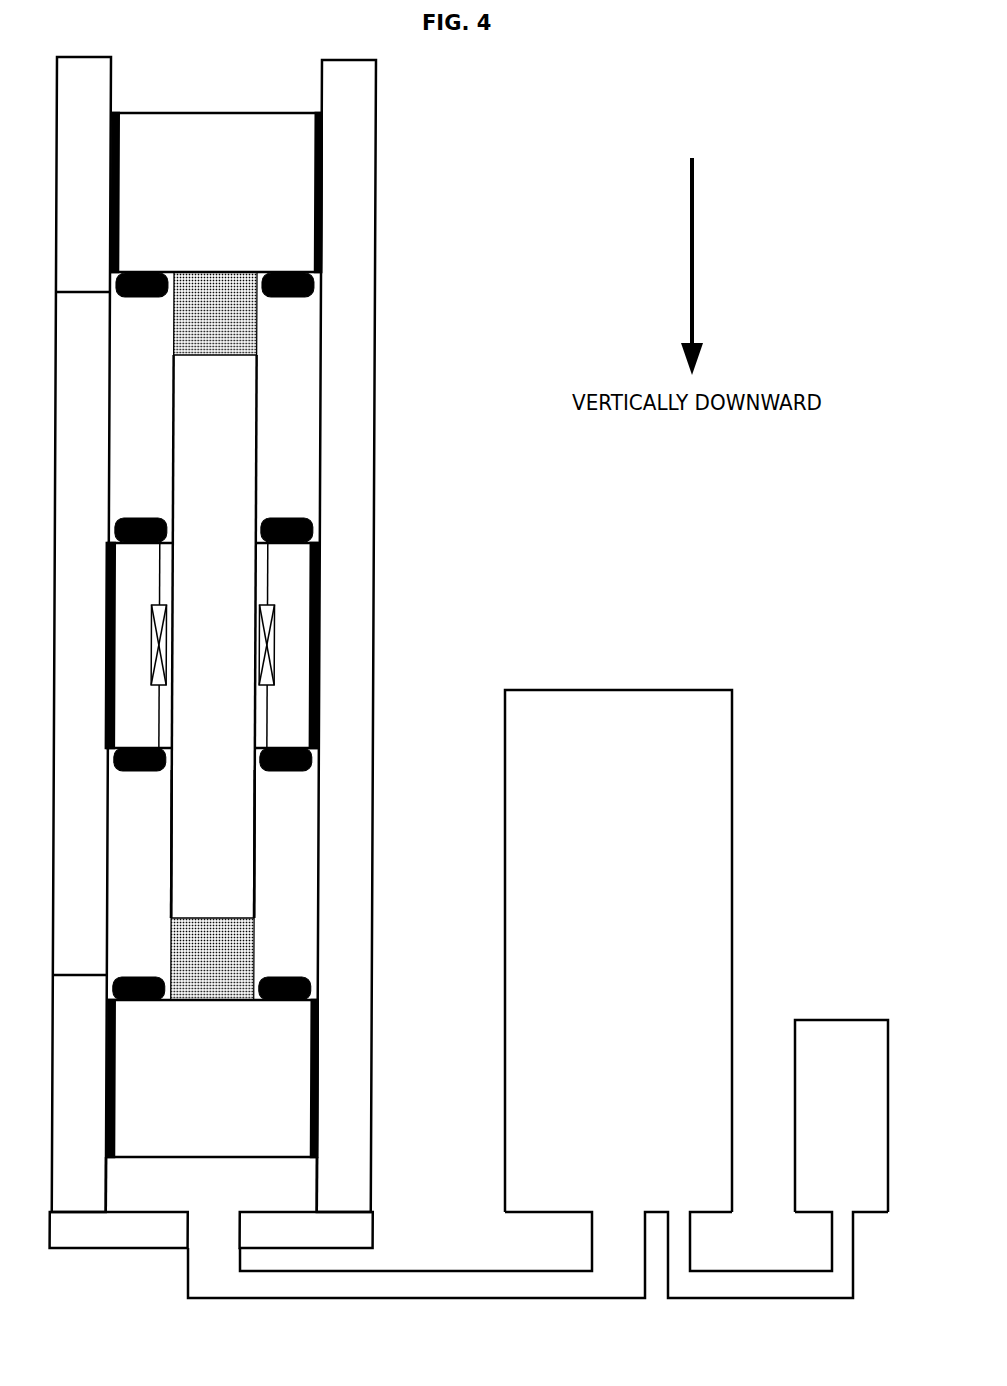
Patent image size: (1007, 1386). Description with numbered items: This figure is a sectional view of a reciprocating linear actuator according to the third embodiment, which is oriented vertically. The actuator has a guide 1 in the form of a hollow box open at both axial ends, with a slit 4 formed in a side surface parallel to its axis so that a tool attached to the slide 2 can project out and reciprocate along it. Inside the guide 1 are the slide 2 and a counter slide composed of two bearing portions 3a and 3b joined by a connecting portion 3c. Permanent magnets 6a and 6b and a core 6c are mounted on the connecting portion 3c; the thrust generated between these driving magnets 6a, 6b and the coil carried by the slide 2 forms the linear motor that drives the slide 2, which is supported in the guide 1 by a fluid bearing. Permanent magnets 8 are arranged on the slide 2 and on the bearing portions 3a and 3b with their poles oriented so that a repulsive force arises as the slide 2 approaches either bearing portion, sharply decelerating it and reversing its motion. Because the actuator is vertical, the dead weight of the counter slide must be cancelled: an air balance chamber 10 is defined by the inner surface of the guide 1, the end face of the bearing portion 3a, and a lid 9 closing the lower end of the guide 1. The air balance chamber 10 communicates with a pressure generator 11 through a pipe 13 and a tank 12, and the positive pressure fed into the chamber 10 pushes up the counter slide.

The guide 1 is at (350, 588).
The slide 2 is at (300, 697).
The bearing portion 3a is at (278, 1090).
The bearing portion 3b is at (260, 205).
The connecting portion 3c is at (237, 840).
The slit 4 is at (72, 488).
The permanent magnet 6a is at (235, 930).
The permanent magnet 6b is at (243, 332).
The core 6c is at (240, 428).
The permanent magnets 8 is at (310, 281).
The lid 9 is at (378, 1242).
The air balance chamber 10 is at (298, 1180).
The pressure generator 11 is at (857, 1020).
The tank 12 is at (637, 690).
The pipe 13 is at (502, 1271).